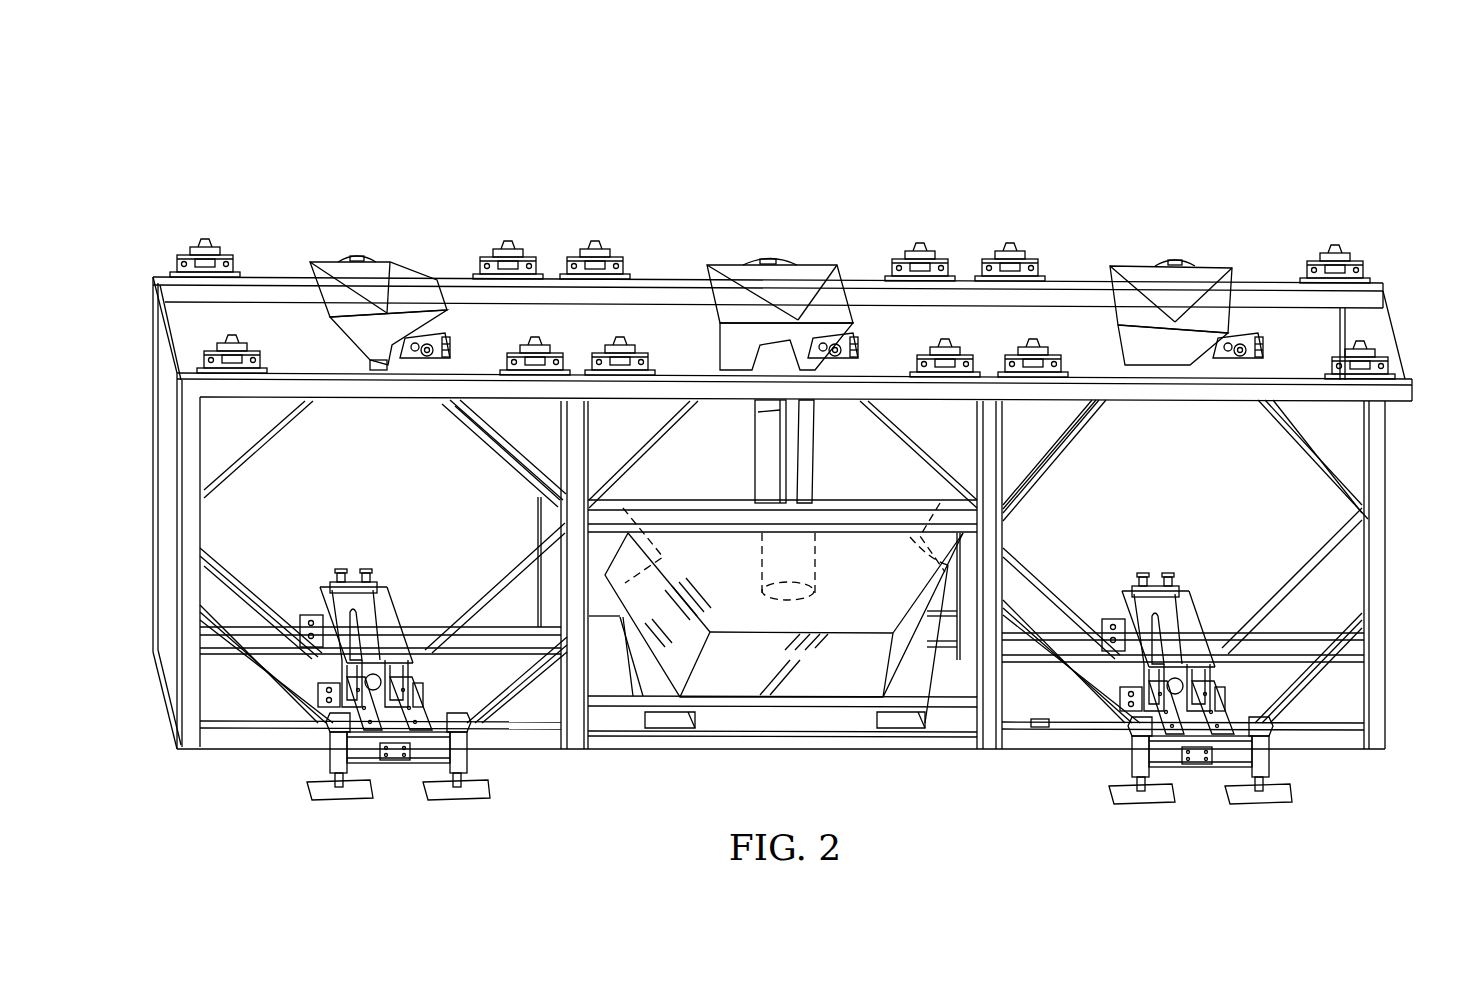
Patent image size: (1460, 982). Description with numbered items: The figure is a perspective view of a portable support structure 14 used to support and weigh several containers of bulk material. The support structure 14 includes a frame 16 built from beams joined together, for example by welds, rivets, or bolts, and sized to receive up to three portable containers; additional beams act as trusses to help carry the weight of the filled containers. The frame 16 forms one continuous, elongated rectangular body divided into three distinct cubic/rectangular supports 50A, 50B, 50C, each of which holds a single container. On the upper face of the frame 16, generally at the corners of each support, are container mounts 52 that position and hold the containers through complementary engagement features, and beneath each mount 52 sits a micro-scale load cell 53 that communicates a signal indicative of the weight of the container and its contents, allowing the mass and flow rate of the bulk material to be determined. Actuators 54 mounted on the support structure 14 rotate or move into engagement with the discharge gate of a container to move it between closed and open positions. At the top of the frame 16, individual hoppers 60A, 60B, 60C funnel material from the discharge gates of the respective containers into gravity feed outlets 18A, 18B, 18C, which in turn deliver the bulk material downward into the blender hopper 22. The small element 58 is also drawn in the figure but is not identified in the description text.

The support structure 14 is at (746, 405).
The frame 16 is at (150, 432).
The gravity feed outlet 18A is at (538, 482).
The gravity feed outlet 18B is at (760, 474).
The gravity feed outlet 18C is at (1018, 462).
The blender hopper 22 is at (850, 638).
The cubic/rectangular support 50A is at (298, 670).
The cubic/rectangular support 50B is at (610, 676).
The cubic/rectangular support 50C is at (1233, 686).
The container mount 52 is at (204, 240).
The micro-scale load cell 53 is at (230, 248).
The actuator 54 is at (360, 254).
The sensor 58 is at (1040, 727).
The hopper 60A is at (398, 270).
The hopper 60B is at (818, 272).
The hopper 60C is at (1115, 277).